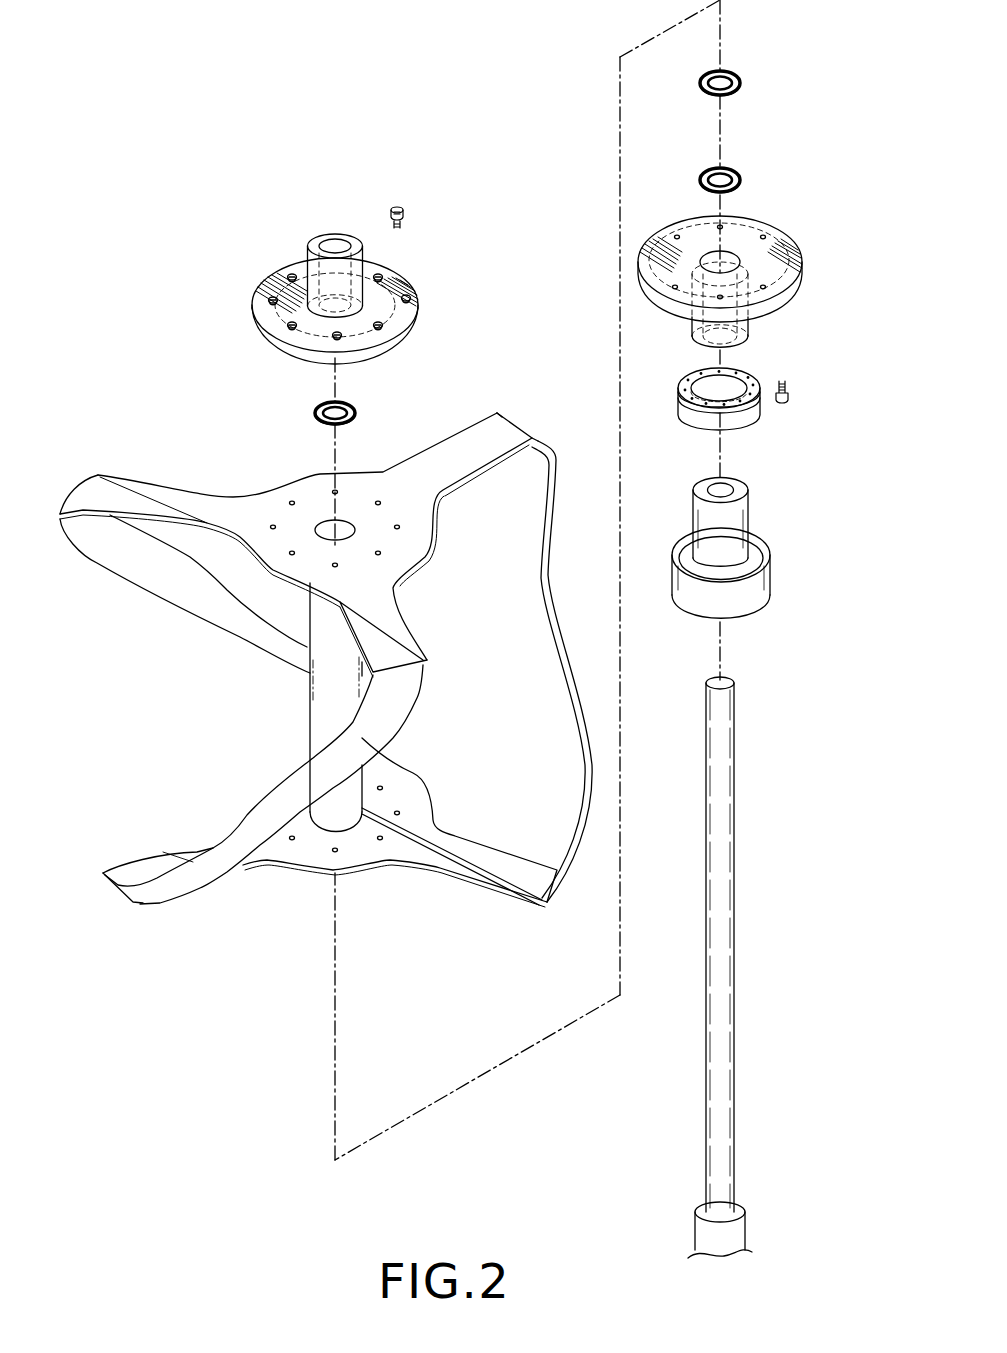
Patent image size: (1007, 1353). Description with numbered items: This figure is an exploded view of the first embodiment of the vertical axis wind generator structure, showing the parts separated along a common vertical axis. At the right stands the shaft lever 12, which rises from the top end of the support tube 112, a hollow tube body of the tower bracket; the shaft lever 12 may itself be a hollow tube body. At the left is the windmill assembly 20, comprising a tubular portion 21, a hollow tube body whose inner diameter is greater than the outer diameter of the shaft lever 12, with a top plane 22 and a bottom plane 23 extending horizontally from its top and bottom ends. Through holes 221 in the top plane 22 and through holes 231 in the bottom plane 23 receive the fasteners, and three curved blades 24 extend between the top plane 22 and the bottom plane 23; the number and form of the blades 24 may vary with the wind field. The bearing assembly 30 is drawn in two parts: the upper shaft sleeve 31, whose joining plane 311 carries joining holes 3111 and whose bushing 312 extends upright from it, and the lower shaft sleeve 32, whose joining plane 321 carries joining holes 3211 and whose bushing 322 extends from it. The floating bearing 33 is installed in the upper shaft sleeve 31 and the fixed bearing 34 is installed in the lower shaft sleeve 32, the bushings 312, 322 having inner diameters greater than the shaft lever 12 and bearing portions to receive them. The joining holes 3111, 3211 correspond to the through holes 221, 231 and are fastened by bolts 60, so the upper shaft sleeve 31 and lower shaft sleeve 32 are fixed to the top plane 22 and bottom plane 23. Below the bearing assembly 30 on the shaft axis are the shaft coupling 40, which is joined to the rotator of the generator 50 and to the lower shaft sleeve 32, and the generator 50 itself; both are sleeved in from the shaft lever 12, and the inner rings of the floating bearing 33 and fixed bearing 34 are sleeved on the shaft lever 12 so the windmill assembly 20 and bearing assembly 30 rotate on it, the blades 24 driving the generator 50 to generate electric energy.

The shaft lever 12 is at (723, 896).
The support tube 112 is at (737, 1236).
The windmill assembly 20 is at (148, 978).
The tubular portion 21 is at (320, 700).
The top plane 22 is at (363, 483).
The through holes 221 is at (397, 527).
The bottom plane 23 is at (397, 788).
The through holes 231 is at (397, 813).
The blades 24 is at (117, 555).
The bearing assembly 30 is at (146, 33).
The upper shaft sleeve 31 is at (262, 257).
The joining plane 311 is at (397, 317).
The joining holes 3111 is at (390, 300).
The bushing 312 is at (352, 243).
The lower shaft sleeve 32 is at (648, 218).
The joining plane 321 is at (763, 253).
The joining holes 3211 is at (780, 264).
The bushing 322 is at (737, 330).
The floating bearing 33 is at (317, 407).
The fixed bearing 34 is at (749, 66).
The shaft coupling 40 is at (753, 418).
The generator 50 is at (757, 578).
The bolts 60 is at (400, 211).